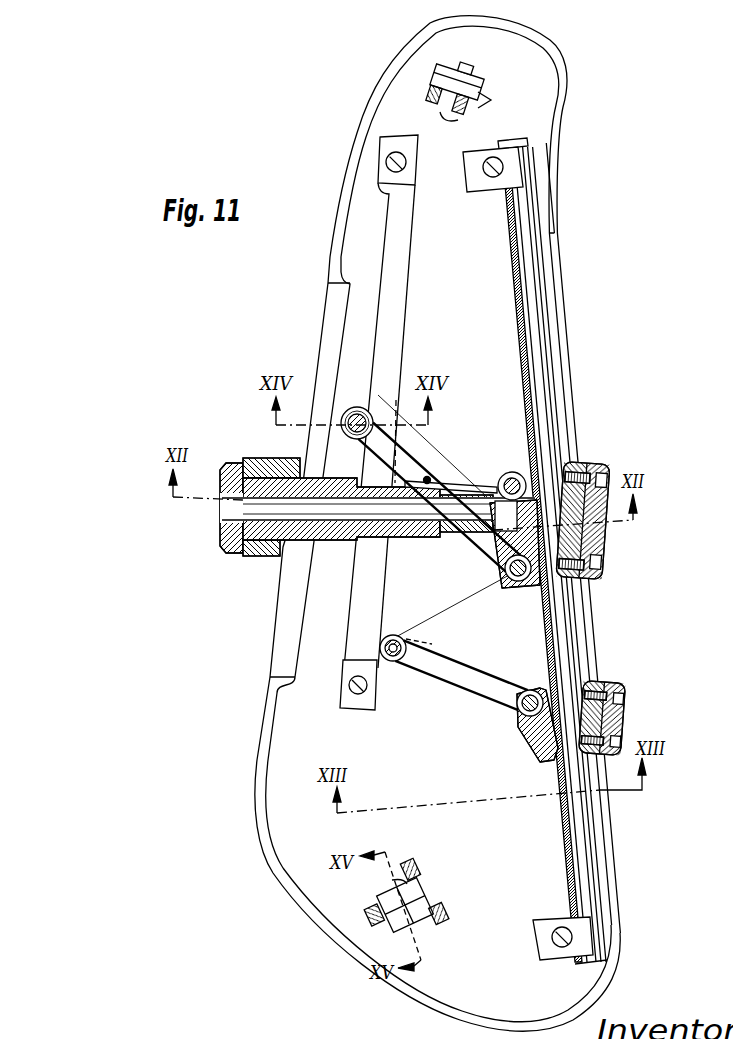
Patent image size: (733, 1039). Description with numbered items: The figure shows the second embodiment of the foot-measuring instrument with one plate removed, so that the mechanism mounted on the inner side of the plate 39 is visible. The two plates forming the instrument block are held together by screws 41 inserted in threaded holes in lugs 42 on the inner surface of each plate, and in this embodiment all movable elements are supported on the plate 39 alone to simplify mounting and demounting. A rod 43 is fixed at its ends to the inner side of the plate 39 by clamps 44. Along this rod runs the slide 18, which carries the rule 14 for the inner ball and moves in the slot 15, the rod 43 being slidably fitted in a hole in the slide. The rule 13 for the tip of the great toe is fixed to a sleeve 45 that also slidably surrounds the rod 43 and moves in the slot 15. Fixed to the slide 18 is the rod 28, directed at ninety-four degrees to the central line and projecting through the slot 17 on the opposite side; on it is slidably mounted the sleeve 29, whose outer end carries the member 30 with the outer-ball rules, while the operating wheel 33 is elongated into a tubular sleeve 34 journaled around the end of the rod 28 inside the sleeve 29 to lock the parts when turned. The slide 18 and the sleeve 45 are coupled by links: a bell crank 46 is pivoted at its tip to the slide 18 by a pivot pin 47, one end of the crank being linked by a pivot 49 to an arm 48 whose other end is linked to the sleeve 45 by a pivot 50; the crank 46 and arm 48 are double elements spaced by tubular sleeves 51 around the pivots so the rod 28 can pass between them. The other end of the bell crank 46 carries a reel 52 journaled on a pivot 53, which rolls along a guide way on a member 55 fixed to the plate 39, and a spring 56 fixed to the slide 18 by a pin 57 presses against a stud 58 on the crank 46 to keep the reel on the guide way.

The transversal rule 13 is at (598, 682).
The rule 14 is at (604, 547).
The slot 15 is at (563, 313).
The slot 17 is at (322, 322).
The slide 18 is at (610, 458).
The rod 28 is at (458, 616).
The sleeve 29 is at (393, 540).
The member 30 is at (243, 552).
The operating wheel 33 is at (244, 461).
The tubular sleeve 34 is at (330, 543).
The plate 39 is at (282, 718).
The screw 41 is at (459, 118).
The lug 42 is at (426, 892).
The rod 43 is at (517, 312).
The clamp 44 is at (480, 193).
The sleeve 45 is at (547, 738).
The bell crank 46 is at (440, 613).
The pivot pin 47 is at (520, 582).
The arm 48 is at (460, 686).
The pivot 49 is at (393, 662).
The pivot 50 is at (534, 690).
The tubular sleeve 51 is at (394, 635).
The reel 52 is at (362, 407).
The pivot 53 is at (368, 410).
The member 55 is at (403, 302).
The spring 56 is at (466, 487).
The pin 57 is at (512, 474).
The stud 58 is at (430, 478).